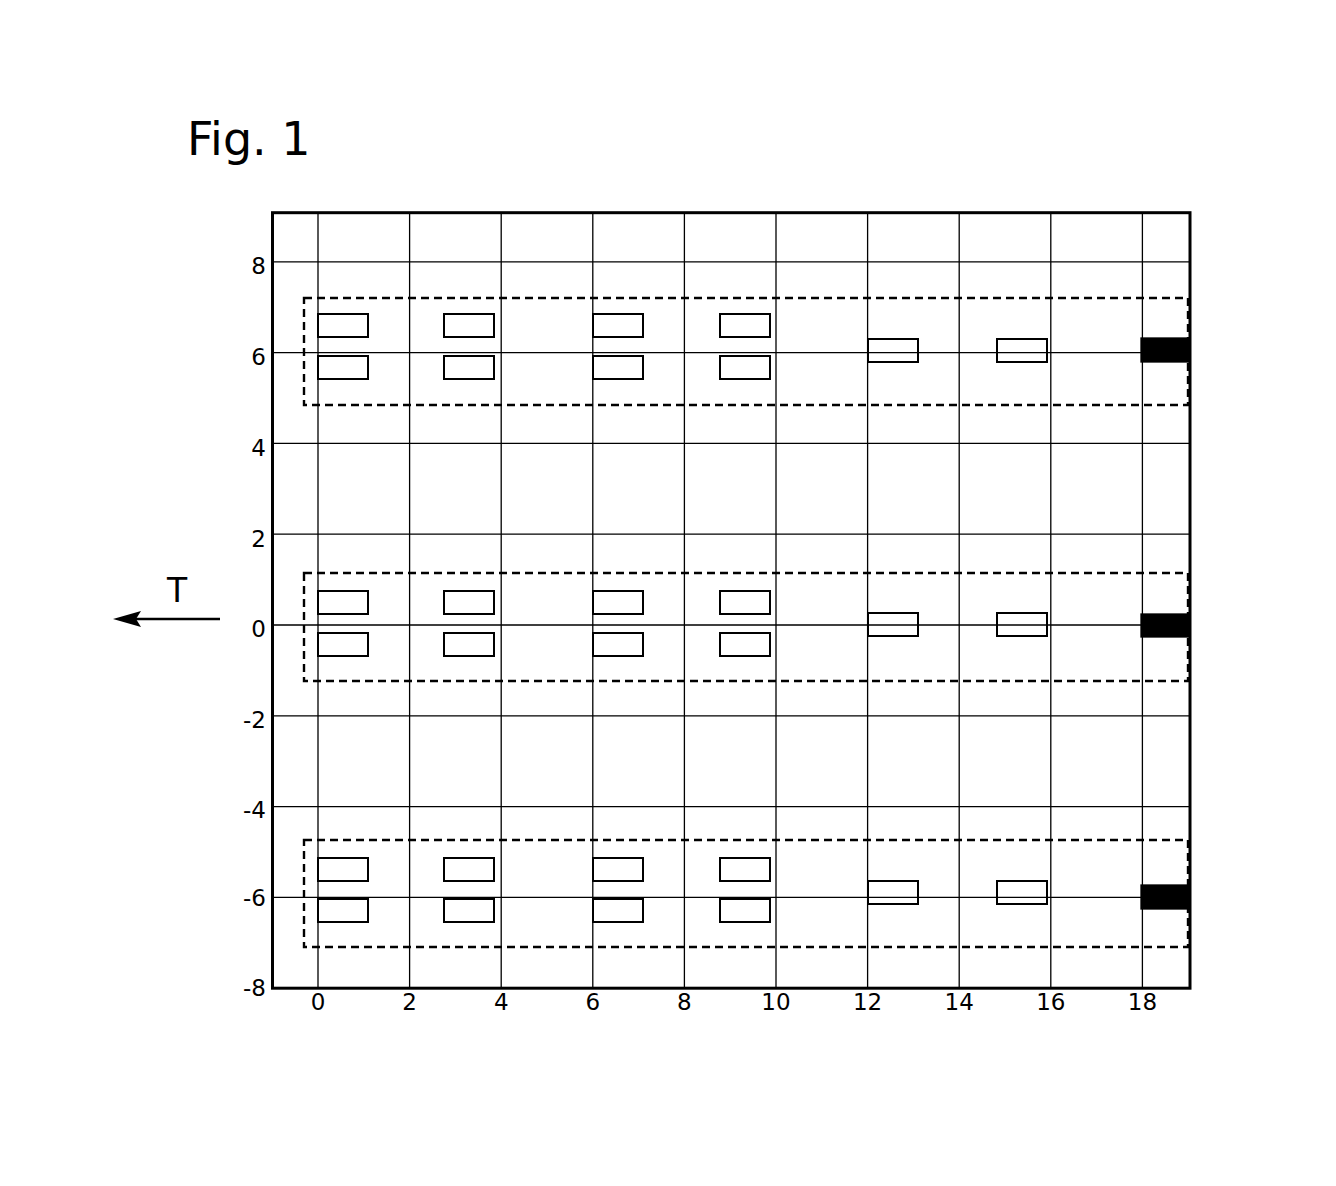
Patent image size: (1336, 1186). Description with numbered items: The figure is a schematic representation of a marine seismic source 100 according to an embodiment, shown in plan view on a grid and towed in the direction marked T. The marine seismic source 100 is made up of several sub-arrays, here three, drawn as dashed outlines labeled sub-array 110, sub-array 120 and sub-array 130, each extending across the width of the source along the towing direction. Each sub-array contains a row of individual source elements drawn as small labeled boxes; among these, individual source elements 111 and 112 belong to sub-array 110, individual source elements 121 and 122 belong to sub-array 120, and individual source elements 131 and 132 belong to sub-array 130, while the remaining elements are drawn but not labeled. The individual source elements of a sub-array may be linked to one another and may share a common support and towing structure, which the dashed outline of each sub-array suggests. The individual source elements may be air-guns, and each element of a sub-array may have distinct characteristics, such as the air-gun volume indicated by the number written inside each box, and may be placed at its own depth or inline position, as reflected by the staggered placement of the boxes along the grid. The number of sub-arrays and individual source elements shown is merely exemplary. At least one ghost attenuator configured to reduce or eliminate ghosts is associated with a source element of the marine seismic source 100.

The marine seismic source 100 is at (748, 181).
The sub-array 110 is at (1160, 406).
The individual source element 111 is at (337, 380).
The individual source element 112 is at (463, 314).
The sub-array 120 is at (1168, 682).
The individual source element 121 is at (603, 592).
The individual source element 122 is at (892, 637).
The sub-array 130 is at (1165, 948).
The individual source element 131 is at (343, 858).
The individual source element 132 is at (1025, 880).